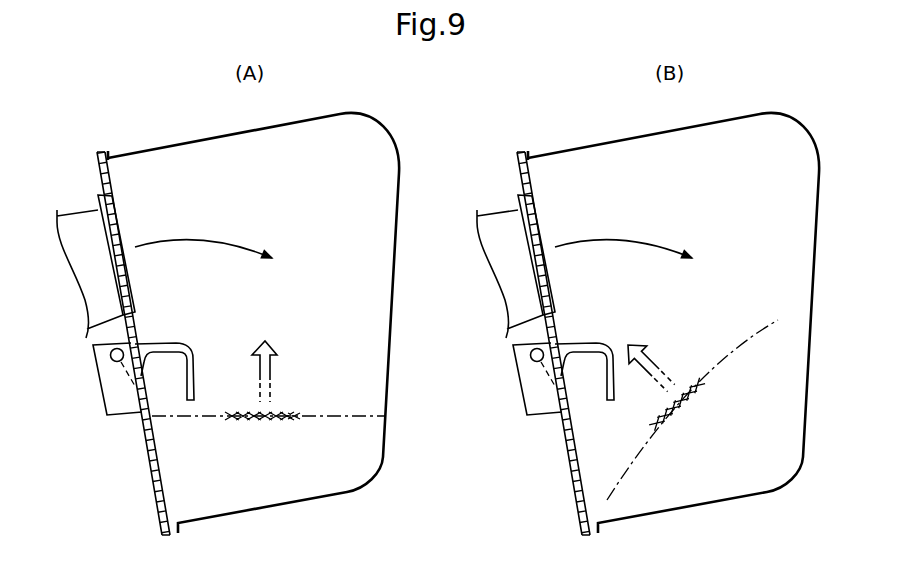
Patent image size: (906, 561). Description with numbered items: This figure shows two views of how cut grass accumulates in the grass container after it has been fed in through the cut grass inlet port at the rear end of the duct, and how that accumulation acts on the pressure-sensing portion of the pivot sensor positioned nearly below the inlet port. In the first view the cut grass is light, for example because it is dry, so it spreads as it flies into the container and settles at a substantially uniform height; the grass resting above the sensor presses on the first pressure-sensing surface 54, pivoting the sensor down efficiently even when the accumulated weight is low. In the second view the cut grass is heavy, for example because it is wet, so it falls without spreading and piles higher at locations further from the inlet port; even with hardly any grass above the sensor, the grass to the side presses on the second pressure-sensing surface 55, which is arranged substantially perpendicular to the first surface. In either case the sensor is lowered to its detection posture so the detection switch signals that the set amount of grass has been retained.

The first pressure-sensing surface 54 is at (170, 342).
The second pressure-sensing surface 55 is at (591, 395).